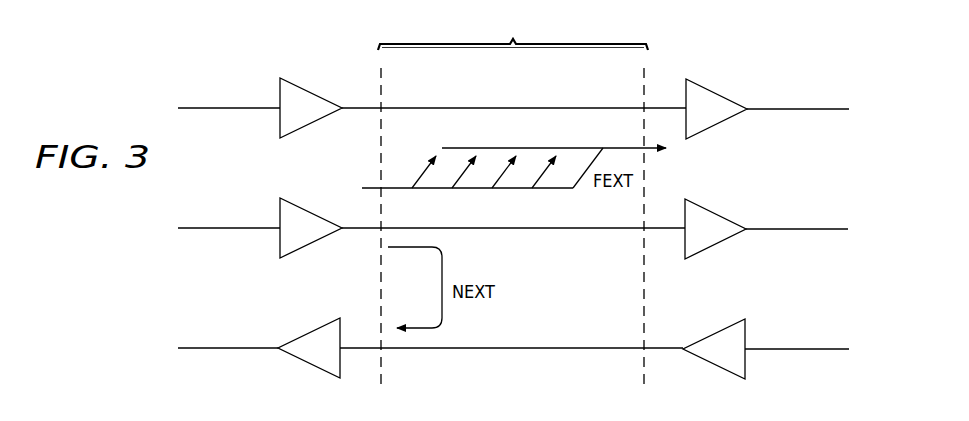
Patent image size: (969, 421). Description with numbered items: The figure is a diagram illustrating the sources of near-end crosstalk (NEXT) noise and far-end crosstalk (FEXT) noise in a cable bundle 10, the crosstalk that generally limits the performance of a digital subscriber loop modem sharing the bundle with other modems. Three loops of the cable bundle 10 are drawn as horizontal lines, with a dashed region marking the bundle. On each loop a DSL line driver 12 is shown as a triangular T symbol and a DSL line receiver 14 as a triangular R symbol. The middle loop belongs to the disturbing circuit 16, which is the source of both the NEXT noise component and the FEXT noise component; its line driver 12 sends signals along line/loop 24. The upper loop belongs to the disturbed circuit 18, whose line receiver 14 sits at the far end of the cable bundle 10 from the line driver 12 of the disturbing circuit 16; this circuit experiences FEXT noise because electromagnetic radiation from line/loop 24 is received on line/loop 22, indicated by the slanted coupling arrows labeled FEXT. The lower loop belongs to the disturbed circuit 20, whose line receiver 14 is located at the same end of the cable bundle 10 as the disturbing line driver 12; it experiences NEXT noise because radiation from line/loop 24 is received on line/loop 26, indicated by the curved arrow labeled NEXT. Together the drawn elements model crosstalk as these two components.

The cable bundle 10 is at (513, 200).
The DSL line driver 12 is at (312, 93).
The DSL line receiver 14 is at (717, 93).
The disturbing circuit 16 is at (228, 230).
The disturbed circuit 18 is at (797, 110).
The disturbed circuit 20 is at (228, 350).
The line/loop 22 is at (513, 107).
The line/loop 24 is at (512, 230).
The line/loop 26 is at (512, 350).